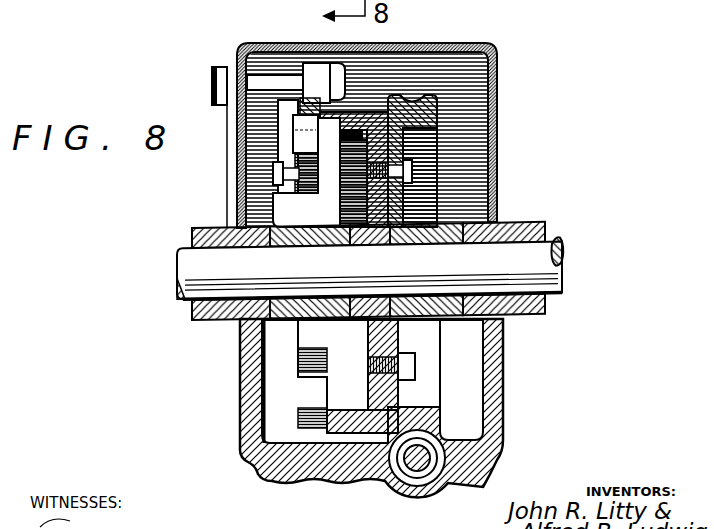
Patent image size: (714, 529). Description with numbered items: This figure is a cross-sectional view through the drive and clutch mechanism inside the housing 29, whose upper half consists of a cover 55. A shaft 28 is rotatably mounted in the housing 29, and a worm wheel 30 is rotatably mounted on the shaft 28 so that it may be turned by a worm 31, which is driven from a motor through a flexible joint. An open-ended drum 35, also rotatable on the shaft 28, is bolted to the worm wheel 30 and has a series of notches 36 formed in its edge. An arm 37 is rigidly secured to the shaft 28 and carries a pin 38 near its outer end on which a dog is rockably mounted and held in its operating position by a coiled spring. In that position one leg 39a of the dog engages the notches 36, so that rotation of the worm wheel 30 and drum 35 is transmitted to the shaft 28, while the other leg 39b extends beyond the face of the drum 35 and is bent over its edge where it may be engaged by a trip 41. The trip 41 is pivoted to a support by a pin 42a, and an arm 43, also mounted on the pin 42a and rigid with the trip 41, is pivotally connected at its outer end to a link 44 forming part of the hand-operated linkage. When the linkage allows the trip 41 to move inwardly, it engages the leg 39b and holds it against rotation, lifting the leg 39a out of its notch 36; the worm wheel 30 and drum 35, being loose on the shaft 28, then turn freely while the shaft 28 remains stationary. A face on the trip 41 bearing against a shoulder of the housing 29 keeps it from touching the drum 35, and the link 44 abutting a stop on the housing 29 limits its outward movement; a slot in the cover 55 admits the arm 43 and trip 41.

The shaft 28 is at (562, 270).
The housing 29 is at (511, 411).
The worm wheel 30 is at (403, 210).
The worm 31 is at (450, 457).
The open-ended drum 35 is at (341, 393).
The notches 36 is at (298, 372).
The arm 37 is at (292, 211).
The pin 38 is at (278, 171).
The leg of dog 39a is at (297, 143).
The leg of dog 39b is at (290, 123).
The trip 41 is at (347, 88).
The pin 42a is at (212, 85).
The arm 43 is at (318, 58).
The link 44 is at (265, 50).
The cover 55 is at (498, 118).